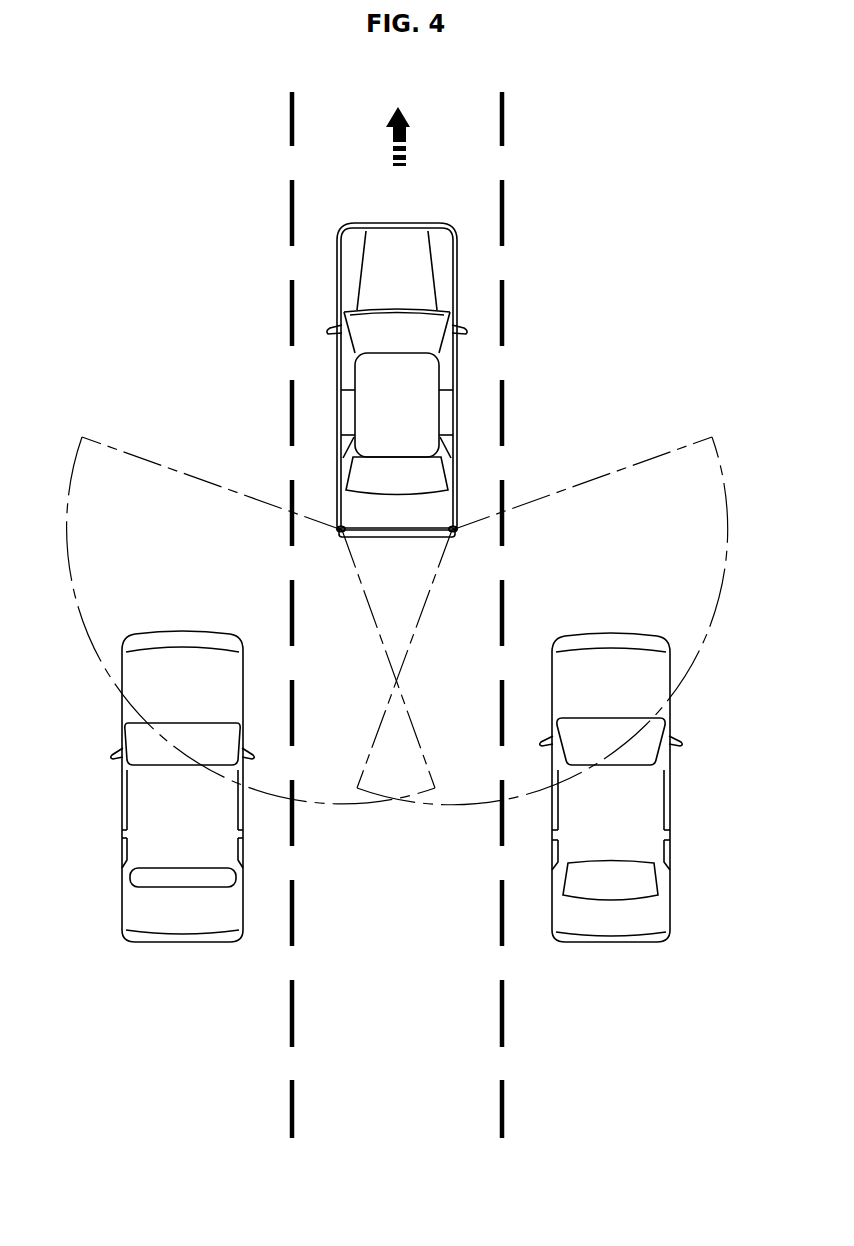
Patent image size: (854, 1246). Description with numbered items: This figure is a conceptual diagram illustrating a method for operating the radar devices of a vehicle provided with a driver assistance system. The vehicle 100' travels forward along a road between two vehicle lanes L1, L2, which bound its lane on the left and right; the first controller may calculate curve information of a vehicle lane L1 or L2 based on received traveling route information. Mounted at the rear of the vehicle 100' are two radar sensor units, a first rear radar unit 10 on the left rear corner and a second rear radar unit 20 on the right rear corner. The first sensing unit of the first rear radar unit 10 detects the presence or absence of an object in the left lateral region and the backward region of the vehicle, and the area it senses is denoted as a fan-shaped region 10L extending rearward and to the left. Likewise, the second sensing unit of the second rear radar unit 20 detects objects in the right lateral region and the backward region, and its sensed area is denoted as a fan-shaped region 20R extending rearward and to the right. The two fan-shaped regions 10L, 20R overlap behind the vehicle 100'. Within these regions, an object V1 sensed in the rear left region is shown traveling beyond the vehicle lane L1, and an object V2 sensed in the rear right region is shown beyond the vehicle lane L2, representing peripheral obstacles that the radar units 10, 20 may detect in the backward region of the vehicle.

The host vehicle 100' is at (397, 357).
The first rear radar unit 10 is at (339, 532).
The second rear radar unit 20 is at (455, 532).
The fan-shaped region 10L is at (153, 462).
The fan-shaped region 20R is at (638, 462).
The vehicle lane L1 is at (291, 328).
The vehicle lane L2 is at (503, 328).
The object V1 is at (148, 803).
The object V2 is at (644, 808).